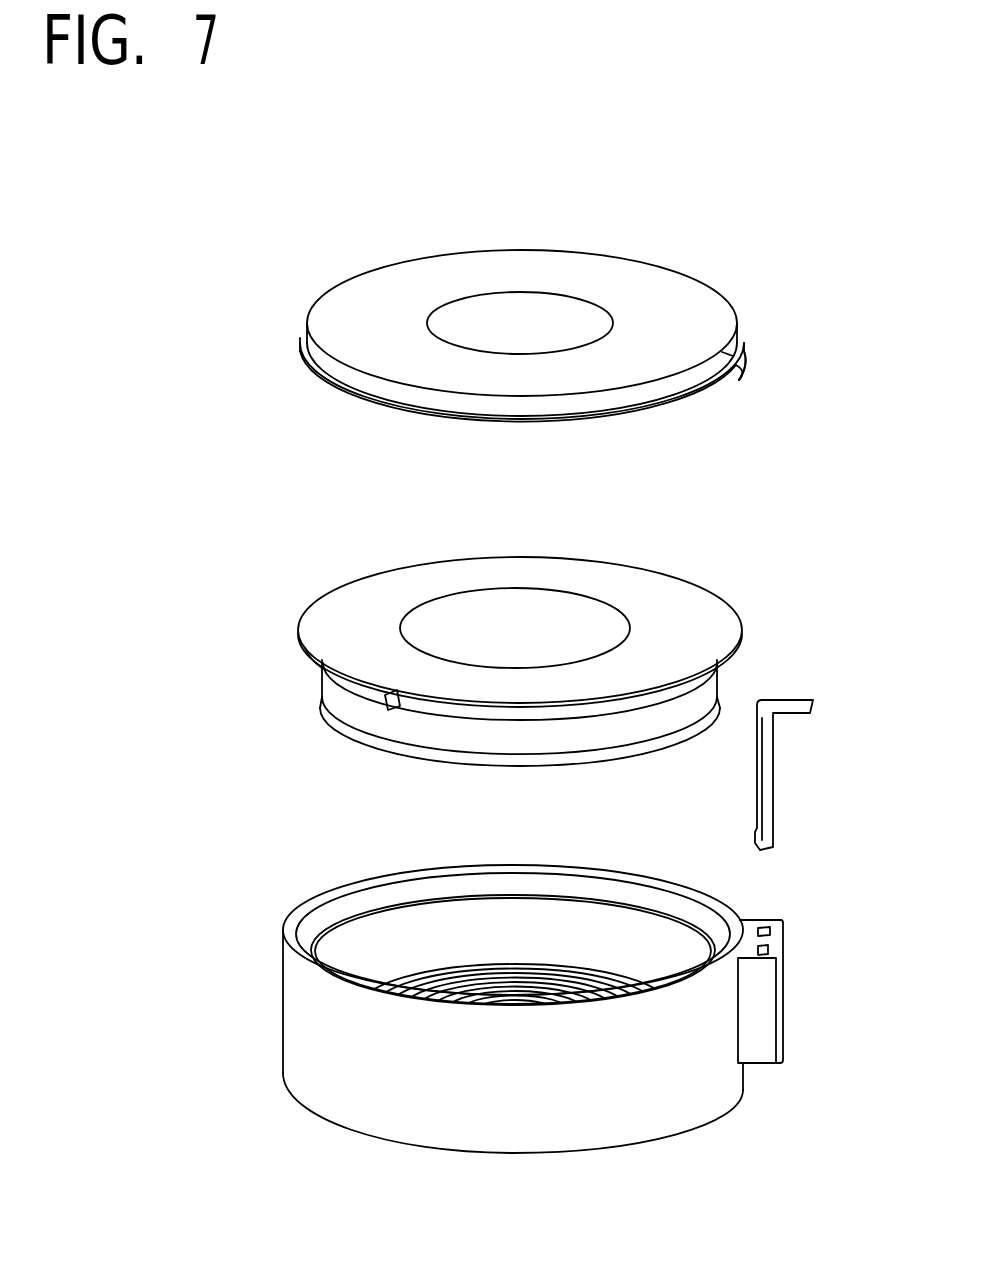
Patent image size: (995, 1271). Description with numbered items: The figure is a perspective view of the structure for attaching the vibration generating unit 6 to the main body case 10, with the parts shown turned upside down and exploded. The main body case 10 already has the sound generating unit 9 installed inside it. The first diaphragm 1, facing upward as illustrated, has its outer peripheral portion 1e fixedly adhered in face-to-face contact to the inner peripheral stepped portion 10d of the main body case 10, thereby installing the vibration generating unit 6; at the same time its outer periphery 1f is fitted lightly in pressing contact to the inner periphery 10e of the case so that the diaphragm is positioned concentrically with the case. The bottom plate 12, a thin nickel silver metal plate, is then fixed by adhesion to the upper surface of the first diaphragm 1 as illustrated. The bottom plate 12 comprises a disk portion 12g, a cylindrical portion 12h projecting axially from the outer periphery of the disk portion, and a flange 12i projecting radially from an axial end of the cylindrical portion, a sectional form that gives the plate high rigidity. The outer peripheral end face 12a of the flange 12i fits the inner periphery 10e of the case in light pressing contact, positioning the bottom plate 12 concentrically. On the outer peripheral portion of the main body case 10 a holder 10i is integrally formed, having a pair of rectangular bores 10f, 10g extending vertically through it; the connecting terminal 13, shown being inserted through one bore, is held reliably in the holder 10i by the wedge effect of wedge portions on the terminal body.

The first diaphragm 1 is at (700, 635).
The outer peripheral portion 1e is at (312, 660).
The outer periphery 1f is at (392, 700).
The vibration generating unit 6 is at (245, 637).
The sound generating unit 9 is at (558, 952).
The main body case 10 is at (318, 1022).
The inner peripheral stepped portion 10d is at (348, 913).
The inner periphery 10e is at (412, 887).
The rectangular bore 10f is at (765, 948).
The rectangular bore 10g is at (766, 929).
The holder 10i is at (765, 1010).
The bottom plate 12 is at (375, 290).
The outer peripheral end face 12a is at (362, 407).
The disk portion 12g is at (660, 283).
The cylindrical portion 12h is at (737, 338).
The flange 12i is at (737, 380).
The connecting terminal 13 is at (768, 893).